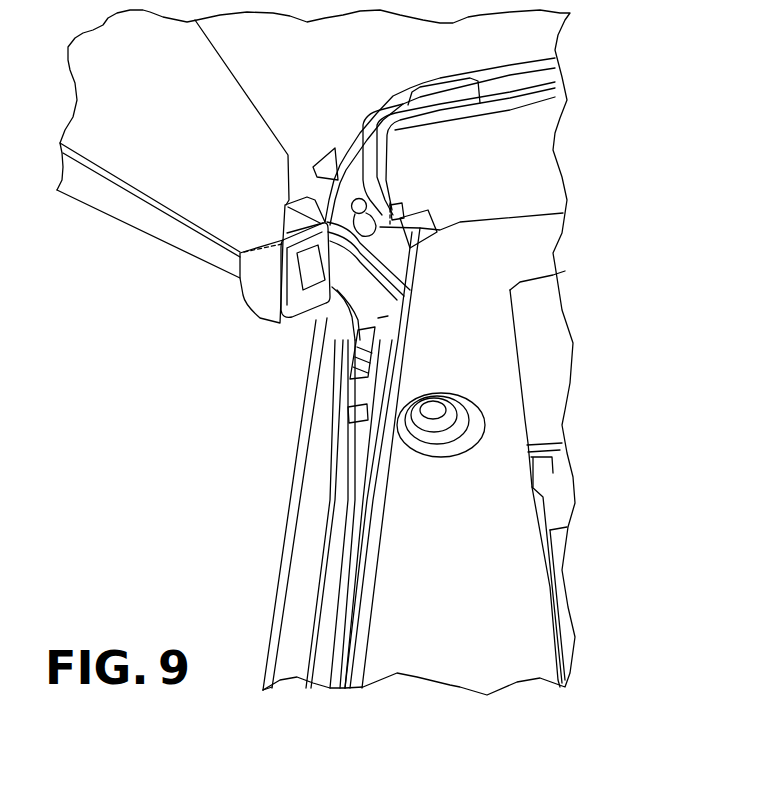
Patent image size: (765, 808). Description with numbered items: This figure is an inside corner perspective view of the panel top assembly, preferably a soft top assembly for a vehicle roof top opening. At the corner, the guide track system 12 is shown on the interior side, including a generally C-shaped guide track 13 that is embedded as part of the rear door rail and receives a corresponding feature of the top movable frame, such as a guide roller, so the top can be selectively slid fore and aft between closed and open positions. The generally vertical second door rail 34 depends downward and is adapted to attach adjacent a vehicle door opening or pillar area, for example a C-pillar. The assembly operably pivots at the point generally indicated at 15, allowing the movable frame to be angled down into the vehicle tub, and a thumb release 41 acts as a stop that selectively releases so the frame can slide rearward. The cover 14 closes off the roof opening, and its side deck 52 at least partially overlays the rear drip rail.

The guide track system 12 is at (281, 324).
The guide track 13 is at (335, 150).
The cover 14 is at (520, 153).
The pivot point 15 is at (297, 338).
The second door rail 34 is at (290, 655).
The thumb release 41 is at (292, 222).
The side deck 52 is at (158, 230).